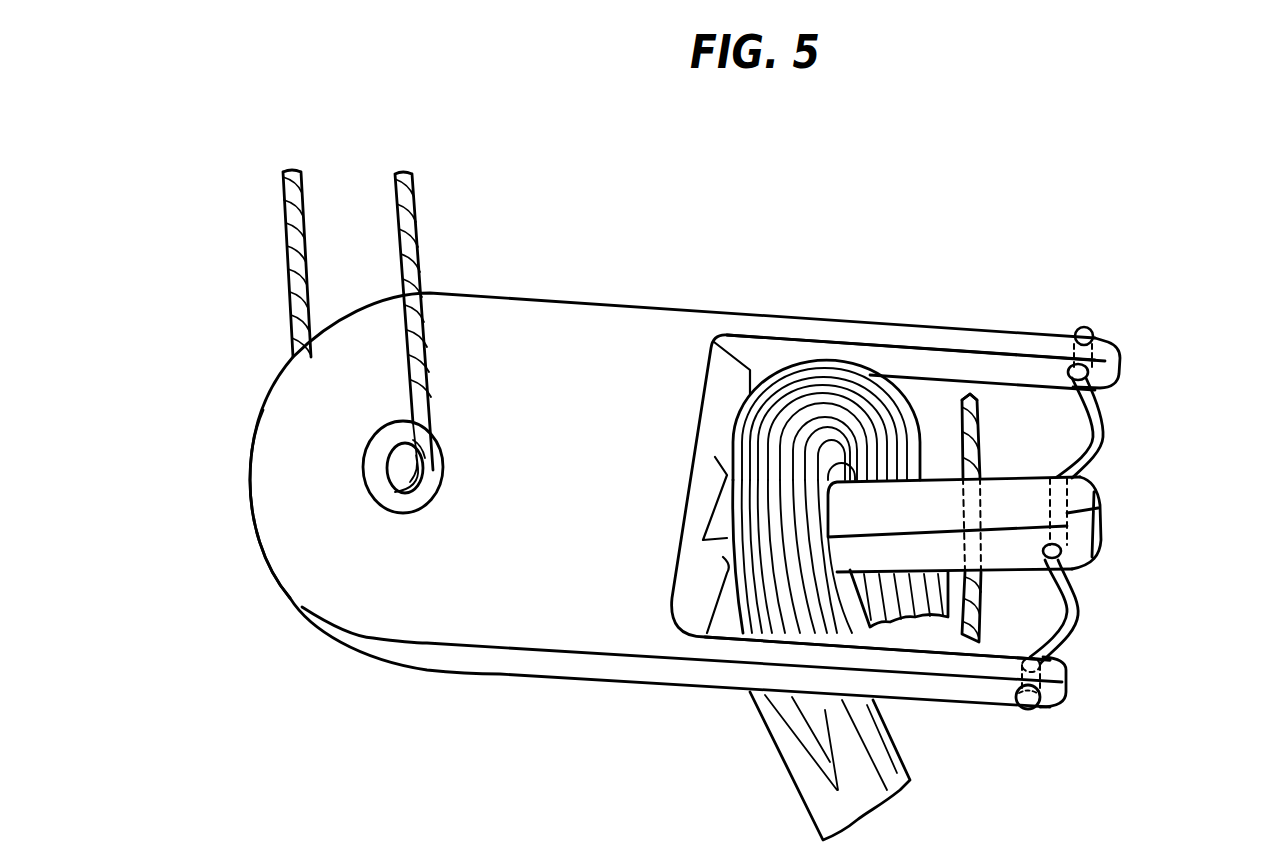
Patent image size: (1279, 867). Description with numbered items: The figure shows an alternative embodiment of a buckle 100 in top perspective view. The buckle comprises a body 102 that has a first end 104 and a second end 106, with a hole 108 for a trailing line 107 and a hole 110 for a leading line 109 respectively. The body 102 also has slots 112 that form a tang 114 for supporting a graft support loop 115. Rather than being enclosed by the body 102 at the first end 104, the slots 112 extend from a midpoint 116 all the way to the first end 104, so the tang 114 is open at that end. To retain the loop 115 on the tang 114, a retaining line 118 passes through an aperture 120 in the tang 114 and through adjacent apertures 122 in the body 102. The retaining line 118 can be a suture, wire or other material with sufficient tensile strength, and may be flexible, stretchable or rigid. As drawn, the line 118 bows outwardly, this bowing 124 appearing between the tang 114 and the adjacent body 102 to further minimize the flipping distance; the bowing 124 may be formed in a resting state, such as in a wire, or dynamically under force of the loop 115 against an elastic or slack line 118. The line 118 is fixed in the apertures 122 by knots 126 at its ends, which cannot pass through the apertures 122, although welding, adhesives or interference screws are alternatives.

The buckle 100 is at (868, 256).
The body 102 is at (460, 623).
The first end 104 is at (1135, 490).
The second end 106 is at (272, 538).
The trailing line 107 is at (977, 427).
The hole 108 is at (1000, 493).
The leading line 109 is at (413, 208).
The hole 110 is at (433, 470).
The slots 112 is at (1043, 410).
The tang 114 is at (937, 500).
The graft support loop 115 is at (793, 385).
The midpoint 116 is at (665, 370).
The retaining line 118 is at (1100, 400).
The aperture 120 is at (1093, 517).
The apertures 122 is at (1100, 345).
The bowing 124 is at (1073, 608).
The knots 126 is at (1030, 710).